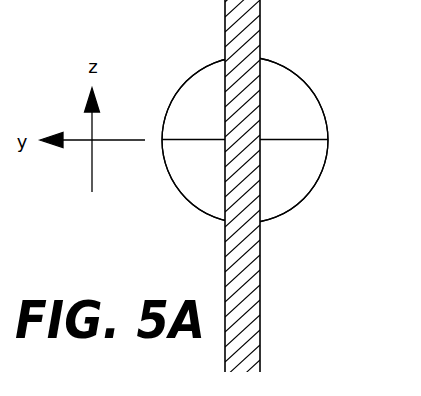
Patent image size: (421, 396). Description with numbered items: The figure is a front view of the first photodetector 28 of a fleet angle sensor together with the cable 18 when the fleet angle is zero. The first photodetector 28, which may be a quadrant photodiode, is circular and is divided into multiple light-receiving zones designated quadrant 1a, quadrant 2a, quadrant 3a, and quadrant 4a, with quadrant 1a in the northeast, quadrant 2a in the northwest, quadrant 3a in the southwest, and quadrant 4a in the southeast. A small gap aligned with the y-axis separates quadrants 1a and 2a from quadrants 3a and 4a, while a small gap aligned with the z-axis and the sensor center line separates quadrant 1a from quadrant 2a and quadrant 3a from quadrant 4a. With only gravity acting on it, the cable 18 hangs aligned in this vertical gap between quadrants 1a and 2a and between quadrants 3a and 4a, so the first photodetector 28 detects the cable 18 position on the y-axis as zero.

The first photodetector 28 is at (302, 75).
The cable 18 is at (260, 298).
The quadrant 1a is at (286, 98).
The quadrant 2a is at (203, 98).
The quadrant 3a is at (203, 181).
The quadrant 4a is at (286, 181).